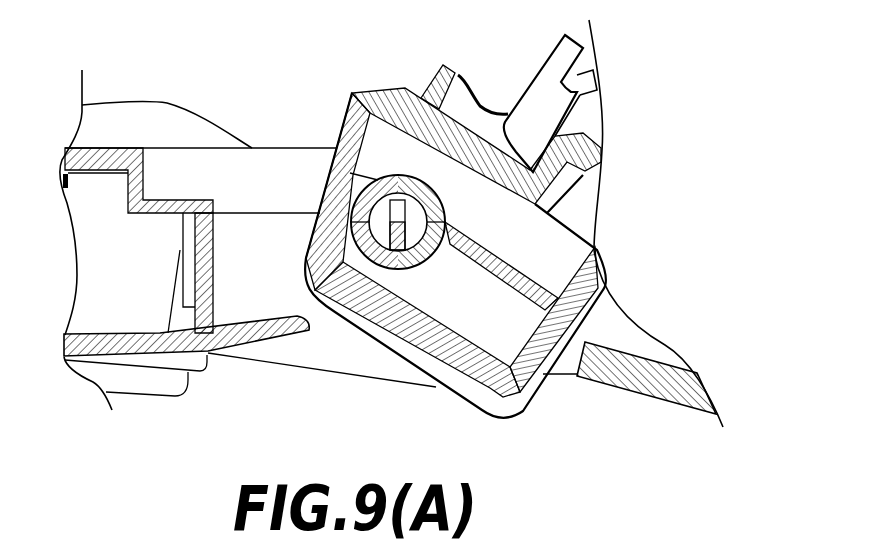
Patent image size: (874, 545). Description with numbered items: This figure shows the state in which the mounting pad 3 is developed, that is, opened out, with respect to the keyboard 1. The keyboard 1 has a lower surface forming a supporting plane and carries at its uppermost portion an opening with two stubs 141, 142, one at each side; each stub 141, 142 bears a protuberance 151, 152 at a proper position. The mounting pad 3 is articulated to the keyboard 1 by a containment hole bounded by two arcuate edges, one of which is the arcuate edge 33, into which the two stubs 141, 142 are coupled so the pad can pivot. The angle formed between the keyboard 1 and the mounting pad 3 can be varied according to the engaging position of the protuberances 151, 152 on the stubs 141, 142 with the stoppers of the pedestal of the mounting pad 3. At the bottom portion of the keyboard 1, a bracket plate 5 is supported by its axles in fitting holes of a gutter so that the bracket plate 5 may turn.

The keyboard 1 is at (173, 387).
The mounting pad 3 is at (527, 410).
The arcuate edge 33 is at (520, 277).
The stub 141 is at (338, 148).
The stub 142 is at (398, 172).
The protuberance 151 is at (629, 139).
The protuberance 152 is at (445, 243).
The bracket plate 5 is at (652, 367).